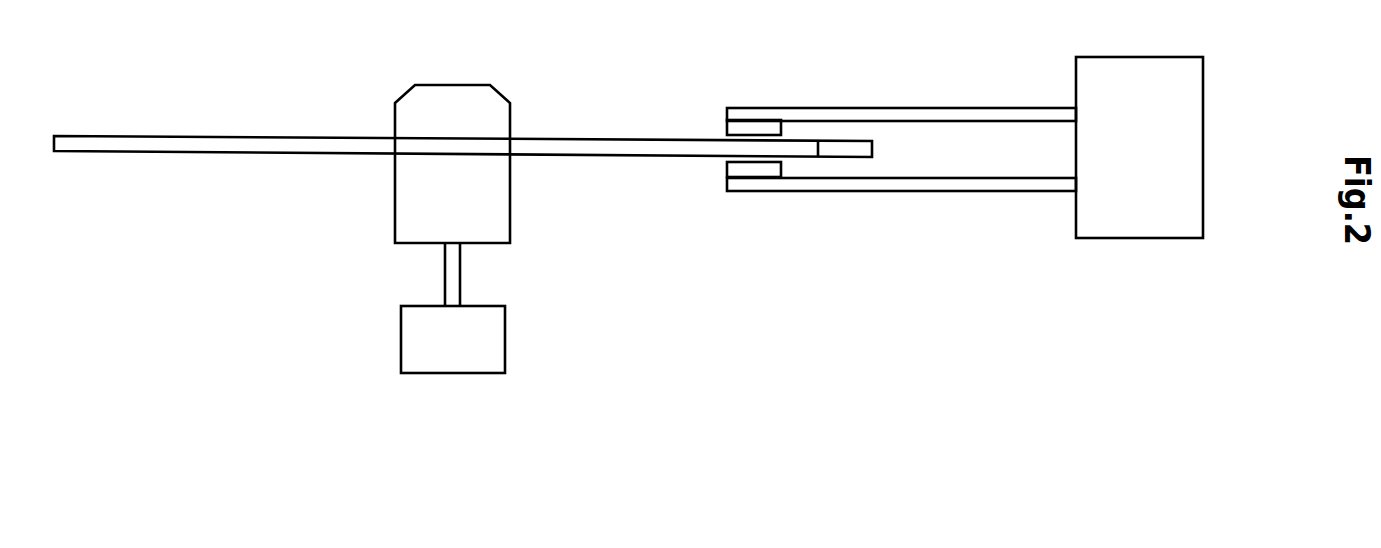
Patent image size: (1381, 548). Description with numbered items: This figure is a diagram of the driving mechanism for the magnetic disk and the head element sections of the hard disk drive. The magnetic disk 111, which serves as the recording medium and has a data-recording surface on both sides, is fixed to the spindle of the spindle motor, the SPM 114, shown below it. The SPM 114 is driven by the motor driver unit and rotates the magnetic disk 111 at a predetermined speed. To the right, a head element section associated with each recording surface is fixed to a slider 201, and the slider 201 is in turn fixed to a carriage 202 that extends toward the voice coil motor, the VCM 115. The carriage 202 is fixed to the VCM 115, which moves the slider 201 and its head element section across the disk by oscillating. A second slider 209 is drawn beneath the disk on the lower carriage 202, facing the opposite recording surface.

The magnetic disk 111 is at (250, 136).
The spindle motor (SPM) 114 is at (505, 328).
The voice coil motor (VCM) 115 is at (1183, 57).
The slider 201 is at (725, 122).
The carriage 202 is at (962, 108).
The lower head slider 209 is at (725, 175).